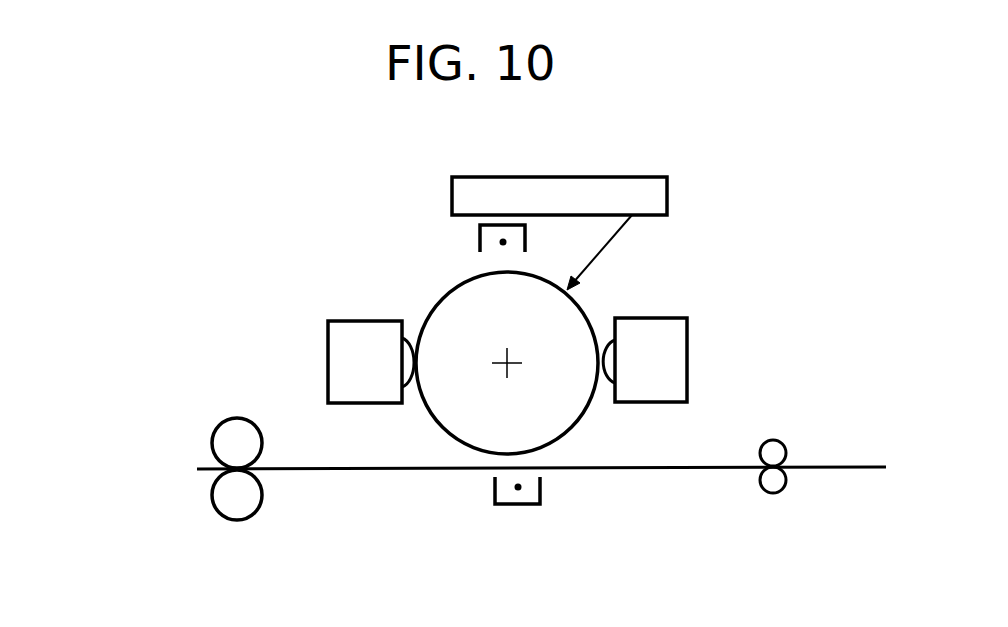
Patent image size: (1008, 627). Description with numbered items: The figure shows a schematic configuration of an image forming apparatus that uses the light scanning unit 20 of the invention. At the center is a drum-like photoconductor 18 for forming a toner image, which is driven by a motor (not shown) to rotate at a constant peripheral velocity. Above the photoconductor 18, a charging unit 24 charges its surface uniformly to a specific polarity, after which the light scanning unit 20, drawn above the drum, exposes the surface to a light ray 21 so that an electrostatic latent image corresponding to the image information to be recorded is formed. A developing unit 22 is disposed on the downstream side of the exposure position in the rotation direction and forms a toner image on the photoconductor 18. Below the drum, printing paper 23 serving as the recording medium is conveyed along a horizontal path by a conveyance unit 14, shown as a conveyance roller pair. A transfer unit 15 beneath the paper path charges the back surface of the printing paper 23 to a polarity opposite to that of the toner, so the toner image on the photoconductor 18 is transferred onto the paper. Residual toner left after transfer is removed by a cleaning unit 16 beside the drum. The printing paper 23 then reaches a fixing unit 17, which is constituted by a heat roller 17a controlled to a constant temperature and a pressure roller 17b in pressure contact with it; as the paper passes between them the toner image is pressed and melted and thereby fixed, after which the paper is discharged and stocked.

The conveyance unit 14 is at (772, 494).
The transfer unit 15 is at (517, 505).
The cleaning unit 16 is at (328, 352).
The fixing unit 17 is at (118, 407).
The heat roller 17a is at (227, 452).
The pressure roller 17b is at (227, 505).
The photoconductor 18 is at (438, 302).
The light scanning unit 20 is at (617, 176).
The light ray 21 is at (603, 247).
The developing unit 22 is at (687, 335).
The printing paper 23 is at (855, 467).
The charging unit 24 is at (480, 243).